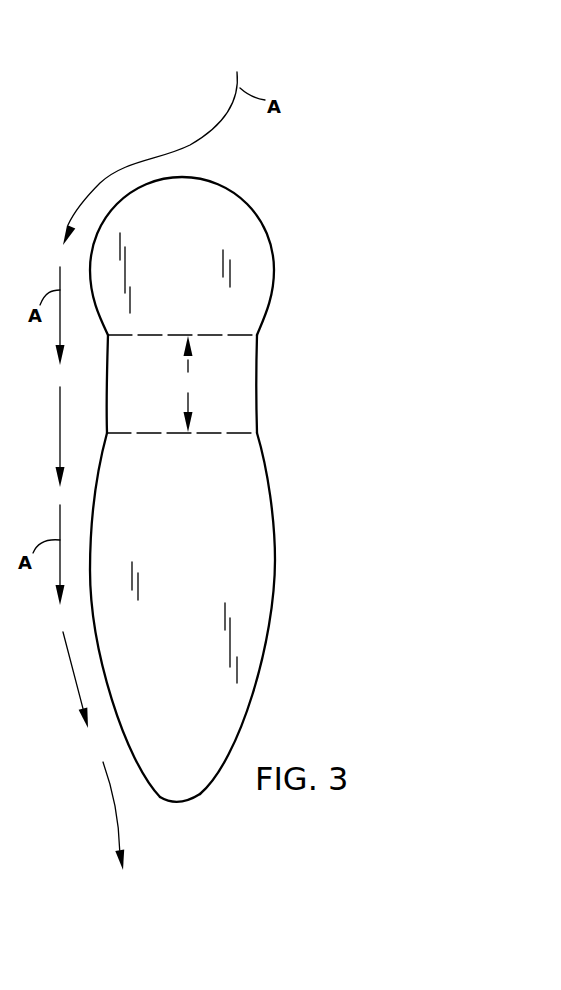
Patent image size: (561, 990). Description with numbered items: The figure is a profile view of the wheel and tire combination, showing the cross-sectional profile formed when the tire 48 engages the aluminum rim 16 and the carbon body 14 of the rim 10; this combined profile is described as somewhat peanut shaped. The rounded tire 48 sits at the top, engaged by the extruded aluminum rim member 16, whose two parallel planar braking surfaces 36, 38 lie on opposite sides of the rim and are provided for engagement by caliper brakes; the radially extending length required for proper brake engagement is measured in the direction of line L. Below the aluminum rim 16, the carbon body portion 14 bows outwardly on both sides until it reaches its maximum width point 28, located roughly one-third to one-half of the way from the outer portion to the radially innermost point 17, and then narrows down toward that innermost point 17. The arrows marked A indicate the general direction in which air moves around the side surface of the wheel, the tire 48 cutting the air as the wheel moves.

The rim 10 is at (145, 96).
The carbon body portion 14 is at (170, 643).
The extruded aluminum rim member 16 is at (236, 405).
The radially innermost point 17 is at (180, 802).
The maximum width point 28 is at (268, 473).
The braking surface 36 is at (257, 348).
The braking surface 38 is at (108, 368).
The tire 48 is at (247, 229).